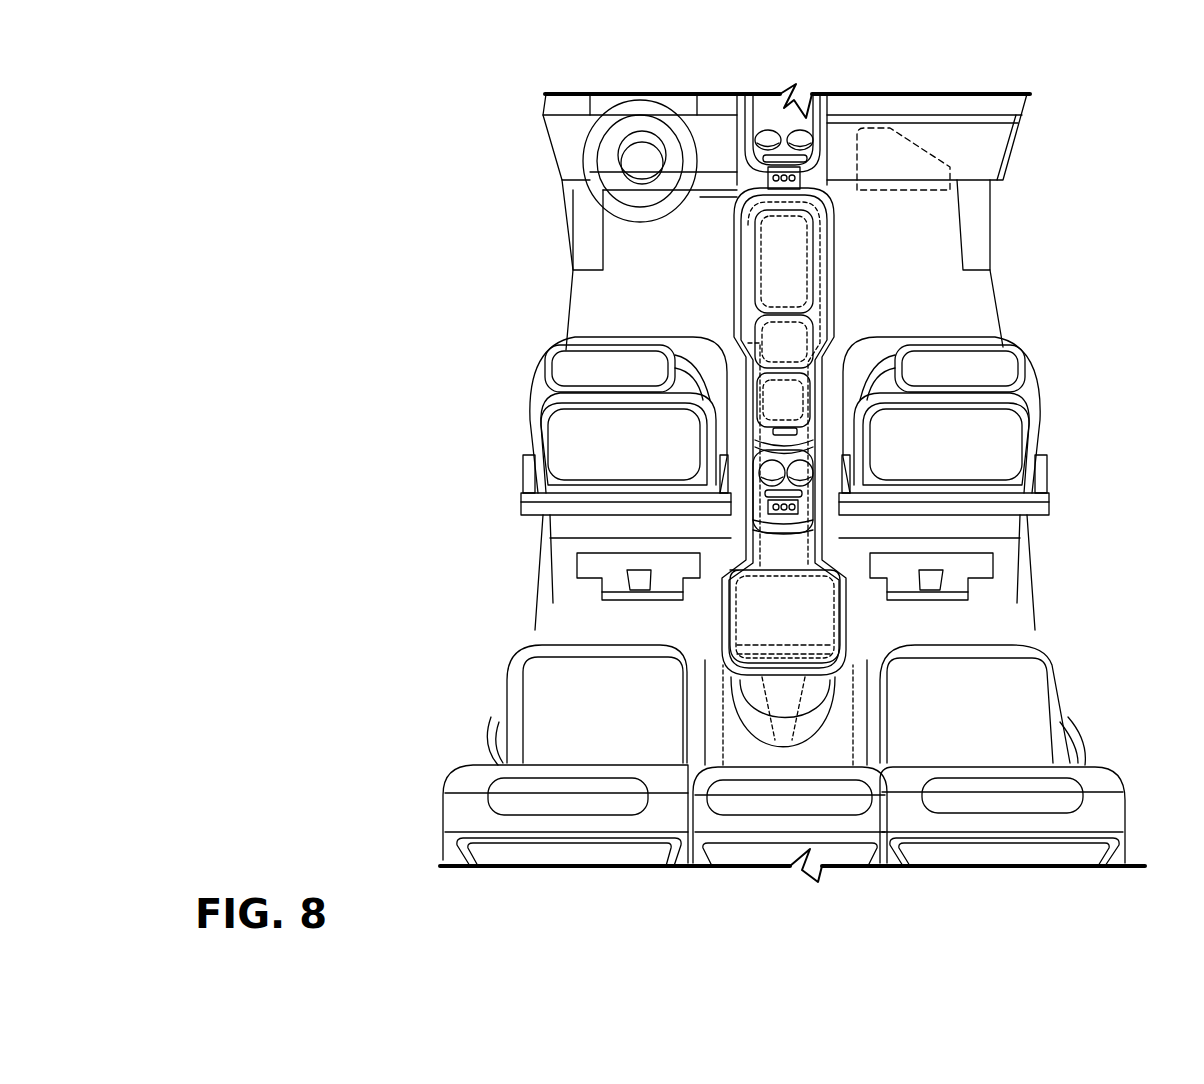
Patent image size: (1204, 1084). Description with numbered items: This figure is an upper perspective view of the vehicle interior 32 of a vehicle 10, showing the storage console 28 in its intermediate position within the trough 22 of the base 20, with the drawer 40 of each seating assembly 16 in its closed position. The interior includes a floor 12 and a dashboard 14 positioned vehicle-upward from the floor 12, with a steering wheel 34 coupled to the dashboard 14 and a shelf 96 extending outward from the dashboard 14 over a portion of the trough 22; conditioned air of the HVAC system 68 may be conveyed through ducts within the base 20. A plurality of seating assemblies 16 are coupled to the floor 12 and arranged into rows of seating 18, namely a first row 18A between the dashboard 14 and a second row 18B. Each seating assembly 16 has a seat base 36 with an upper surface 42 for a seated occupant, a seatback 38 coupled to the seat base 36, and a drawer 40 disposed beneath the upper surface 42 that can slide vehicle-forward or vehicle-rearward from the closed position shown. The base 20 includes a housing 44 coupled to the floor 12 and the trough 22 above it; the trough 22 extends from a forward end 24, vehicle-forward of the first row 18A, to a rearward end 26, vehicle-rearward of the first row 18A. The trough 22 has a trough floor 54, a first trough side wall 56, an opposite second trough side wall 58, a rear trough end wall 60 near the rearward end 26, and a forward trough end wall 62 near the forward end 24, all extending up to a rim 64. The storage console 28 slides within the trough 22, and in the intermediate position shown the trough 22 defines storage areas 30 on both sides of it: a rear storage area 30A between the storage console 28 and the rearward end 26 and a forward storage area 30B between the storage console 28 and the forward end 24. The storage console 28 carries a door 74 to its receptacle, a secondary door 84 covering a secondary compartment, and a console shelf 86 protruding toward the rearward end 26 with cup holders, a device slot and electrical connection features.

The vehicle 10 is at (1082, 92).
The floor 12 is at (635, 246).
The dashboard 14 is at (958, 136).
The seating assembly 16 is at (522, 359).
The rows of seating 18 is at (706, 601).
The first row 18A is at (508, 394).
The second row 18B is at (445, 766).
The base 20 is at (710, 615).
The trough 22 is at (835, 614).
The forward end 24 is at (742, 96).
The rearward end 26 is at (782, 673).
The storage console 28 is at (740, 414).
The storage areas 30 is at (879, 549).
The rear storage area 30A is at (722, 655).
The forward storage area 30B is at (813, 225).
The vehicle interior 32 is at (520, 136).
The steering wheel 34 is at (592, 157).
The seat base 36 is at (693, 352).
The seatback 38 is at (570, 418).
The drawer 40 is at (590, 560).
The upper surface 42 is at (695, 340).
The housing 44 is at (813, 687).
The trough floor 54 is at (775, 615).
The first trough side wall 56 is at (745, 312).
The second trough side wall 58 is at (810, 268).
The rear trough end wall 60 is at (797, 730).
The forward trough end wall 62 is at (818, 128).
The rim 64 is at (768, 579).
The HVAC system 68 is at (920, 126).
The door 74 is at (790, 430).
The secondary door 84 is at (785, 343).
The console shelf 86 is at (742, 499).
The shelf 96 is at (806, 104).